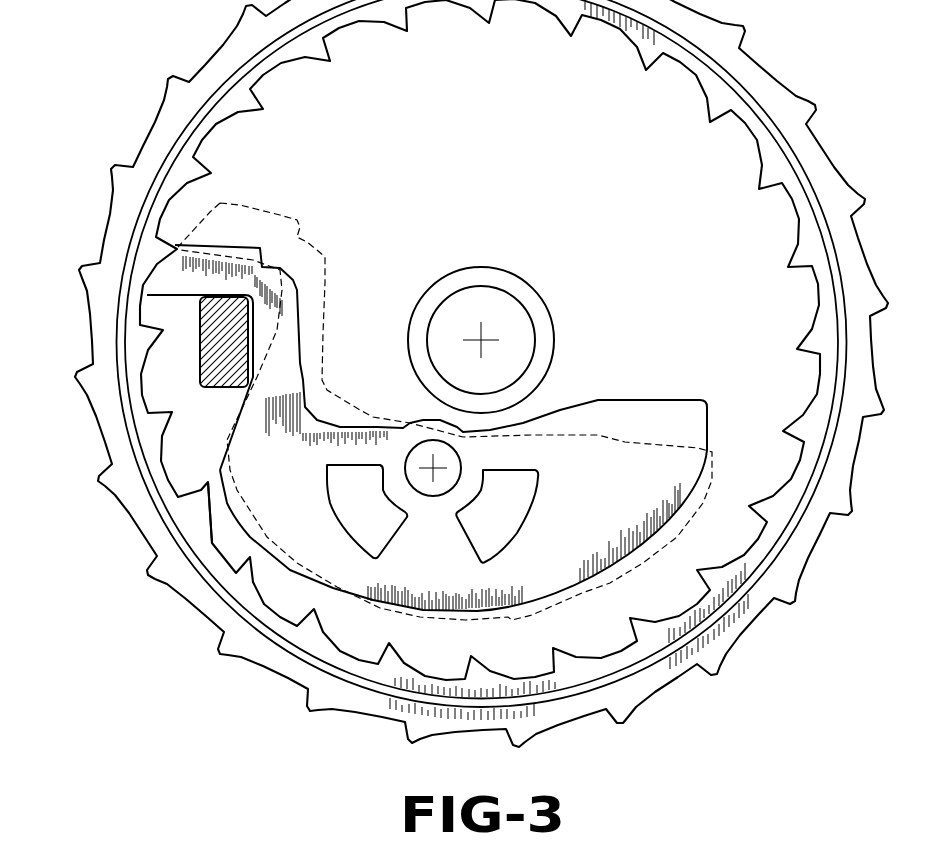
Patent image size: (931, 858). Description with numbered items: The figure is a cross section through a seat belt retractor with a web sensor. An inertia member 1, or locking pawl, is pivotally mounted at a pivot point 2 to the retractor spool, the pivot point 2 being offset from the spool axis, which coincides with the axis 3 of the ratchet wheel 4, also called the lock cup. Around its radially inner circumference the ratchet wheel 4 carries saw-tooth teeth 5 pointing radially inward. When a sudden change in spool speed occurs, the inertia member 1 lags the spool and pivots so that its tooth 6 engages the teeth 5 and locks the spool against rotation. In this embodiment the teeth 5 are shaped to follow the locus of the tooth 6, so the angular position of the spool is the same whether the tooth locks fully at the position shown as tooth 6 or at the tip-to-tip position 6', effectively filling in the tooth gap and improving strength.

The inertia member 1 is at (623, 500).
The pivot point 2 is at (433, 468).
The axis 3 is at (482, 340).
The ratchet wheel 4 is at (285, 607).
The teeth 5 is at (208, 478).
The tooth 6 is at (172, 344).
The tip-to-tip position of the tooth 6' is at (435, 398).